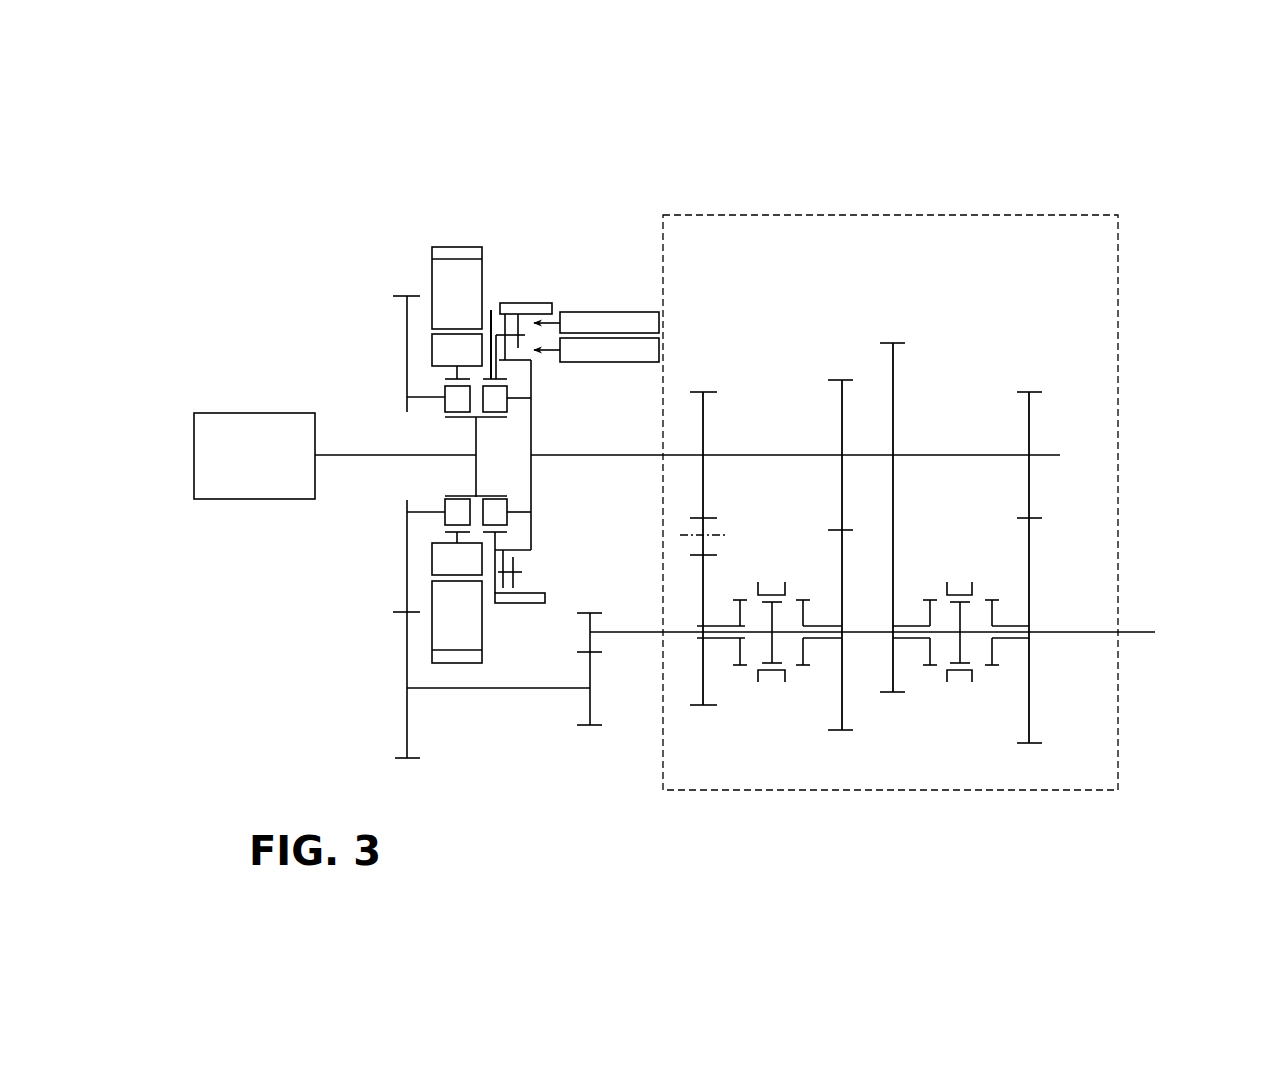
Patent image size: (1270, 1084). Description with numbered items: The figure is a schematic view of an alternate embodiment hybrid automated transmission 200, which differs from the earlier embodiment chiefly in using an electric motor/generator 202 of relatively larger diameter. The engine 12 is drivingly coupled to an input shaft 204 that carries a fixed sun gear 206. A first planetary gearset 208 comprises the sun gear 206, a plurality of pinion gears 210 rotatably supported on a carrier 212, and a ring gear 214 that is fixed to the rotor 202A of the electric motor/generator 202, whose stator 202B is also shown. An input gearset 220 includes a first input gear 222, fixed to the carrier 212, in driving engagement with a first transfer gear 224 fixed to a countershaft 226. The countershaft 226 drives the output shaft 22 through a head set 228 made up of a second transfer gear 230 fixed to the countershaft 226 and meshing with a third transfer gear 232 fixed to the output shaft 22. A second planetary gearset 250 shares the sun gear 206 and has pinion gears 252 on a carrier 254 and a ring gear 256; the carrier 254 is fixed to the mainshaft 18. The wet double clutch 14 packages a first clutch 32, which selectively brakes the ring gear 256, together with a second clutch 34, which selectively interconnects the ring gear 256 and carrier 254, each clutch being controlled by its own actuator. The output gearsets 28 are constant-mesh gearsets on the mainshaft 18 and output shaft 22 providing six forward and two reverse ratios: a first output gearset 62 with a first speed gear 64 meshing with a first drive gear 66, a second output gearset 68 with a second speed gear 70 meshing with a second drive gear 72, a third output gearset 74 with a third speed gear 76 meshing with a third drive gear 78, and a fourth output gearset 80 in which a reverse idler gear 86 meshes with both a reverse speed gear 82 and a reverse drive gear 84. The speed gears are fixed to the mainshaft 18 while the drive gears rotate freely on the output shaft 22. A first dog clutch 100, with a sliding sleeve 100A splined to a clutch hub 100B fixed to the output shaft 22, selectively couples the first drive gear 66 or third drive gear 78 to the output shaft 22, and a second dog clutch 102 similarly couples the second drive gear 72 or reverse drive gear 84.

The engine 12 is at (222, 413).
The double clutch 14 is at (551, 299).
The mainshaft 18 is at (596, 457).
The output shaft 22 is at (628, 630).
The output gearsets 28 is at (1094, 416).
The first clutch 32 is at (520, 298).
The second clutch 34 is at (531, 363).
The first output gearset 62 is at (1026, 373).
The first speed gear 64 is at (1029, 417).
The first drive gear 66 is at (1029, 531).
The second output gearset 68 is at (838, 372).
The second speed gear 70 is at (842, 412).
The second drive gear 72 is at (842, 575).
The third output gearset 74 is at (914, 334).
The third speed gear 76 is at (893, 365).
The third drive gear 78 is at (893, 592).
The fourth output gearset 80 is at (702, 378).
The reverse speed gear 82 is at (703, 424).
The reverse drive gear 84 is at (703, 592).
The reverse idler gear 86 is at (710, 526).
The first dog clutch 100 is at (993, 686).
The sliding sleeve 100A is at (958, 590).
The clutch hub 100B is at (960, 650).
The second dog clutch 102 is at (797, 678).
The transmission 200 is at (1161, 158).
The electric motor/generator 202 is at (456, 243).
The rotor 202A is at (437, 568).
The stator 202B is at (445, 640).
The input shaft 204 is at (345, 455).
The sun gear 206 is at (450, 420).
The first planetary gearset 208 is at (441, 524).
The pinion gears 210 is at (452, 503).
The carrier 212 is at (407, 532).
The ring gear 214 is at (458, 535).
The input gearset 220 is at (378, 288).
The first input gear 222 is at (407, 316).
The first transfer gear 224 is at (402, 732).
The countershaft 226 is at (523, 690).
The head set 228 is at (590, 742).
The second transfer gear 230 is at (590, 672).
The third transfer gear 232 is at (587, 625).
The second planetary gearset 250 is at (536, 370).
The pinion gears 252 is at (515, 412).
The carrier 254 is at (580, 455).
The ring gear 256 is at (491, 310).